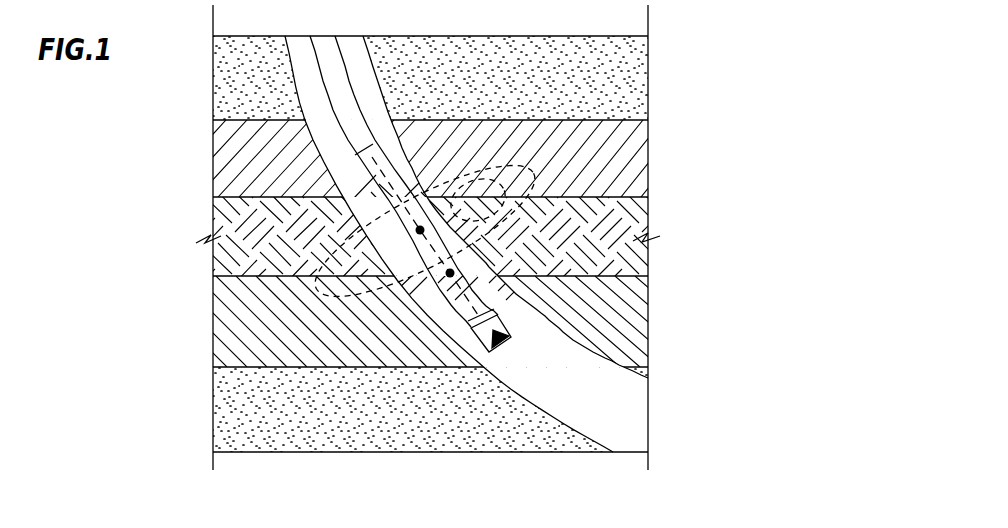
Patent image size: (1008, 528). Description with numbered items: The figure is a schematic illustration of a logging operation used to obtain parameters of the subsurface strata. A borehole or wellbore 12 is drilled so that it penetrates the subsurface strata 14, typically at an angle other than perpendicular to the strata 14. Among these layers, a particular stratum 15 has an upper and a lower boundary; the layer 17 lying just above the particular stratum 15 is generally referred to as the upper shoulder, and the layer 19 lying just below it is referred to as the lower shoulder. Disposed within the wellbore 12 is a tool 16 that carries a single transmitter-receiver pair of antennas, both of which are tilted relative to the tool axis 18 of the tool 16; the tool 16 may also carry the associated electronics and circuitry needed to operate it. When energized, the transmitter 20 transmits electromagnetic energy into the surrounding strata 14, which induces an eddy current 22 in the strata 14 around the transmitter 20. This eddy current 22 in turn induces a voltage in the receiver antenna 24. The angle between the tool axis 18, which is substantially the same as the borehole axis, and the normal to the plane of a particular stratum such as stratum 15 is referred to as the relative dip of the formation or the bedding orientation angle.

The wellbore 12 is at (650, 377).
The subsurface strata 14 is at (213, 398).
The particular stratum 15 is at (213, 307).
The tool 16 is at (397, 138).
The layer 17 is at (213, 259).
The tool axis 18 is at (506, 346).
The layer 19 is at (503, 452).
The transmitter 20 is at (420, 230).
The eddy current 22 is at (527, 167).
The receiver antenna 24 is at (447, 277).